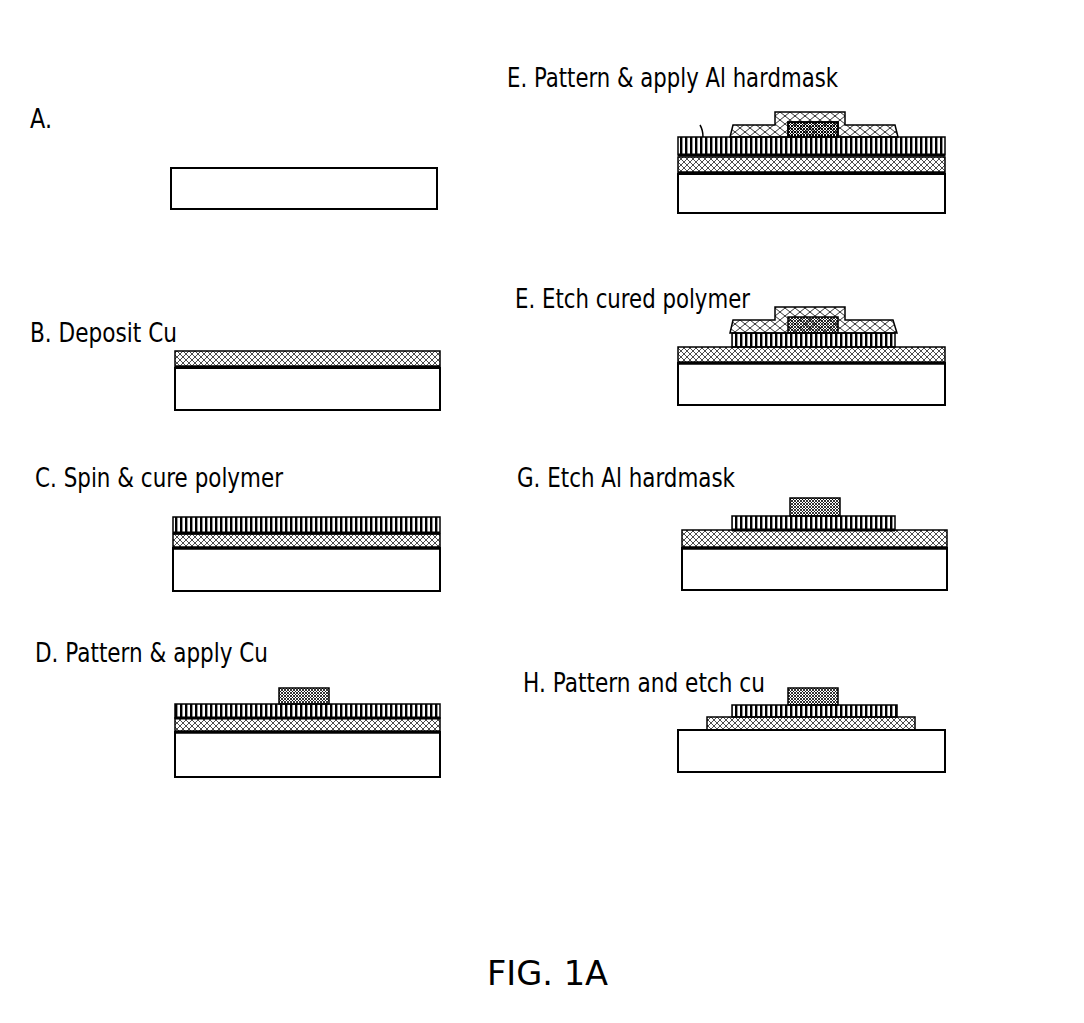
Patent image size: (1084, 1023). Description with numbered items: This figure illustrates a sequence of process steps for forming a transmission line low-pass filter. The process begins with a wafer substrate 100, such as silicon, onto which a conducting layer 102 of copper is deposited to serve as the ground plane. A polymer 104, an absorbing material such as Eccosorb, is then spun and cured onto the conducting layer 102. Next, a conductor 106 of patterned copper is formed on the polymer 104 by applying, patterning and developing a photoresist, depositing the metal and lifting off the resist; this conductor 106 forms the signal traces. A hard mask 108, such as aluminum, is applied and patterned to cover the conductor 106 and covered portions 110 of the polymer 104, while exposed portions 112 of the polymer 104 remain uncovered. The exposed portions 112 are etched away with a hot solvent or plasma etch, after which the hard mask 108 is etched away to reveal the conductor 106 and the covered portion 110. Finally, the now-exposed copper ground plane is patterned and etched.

The wafer substrate 100 is at (367, 168).
The conducting layer 102 is at (378, 351).
The polymer 104 is at (378, 517).
The conductor 106 is at (307, 688).
The hard mask 108 is at (875, 125).
The covered portions of the polymer 110 is at (763, 143).
The exposed portions of the polymer 112 is at (703, 137).